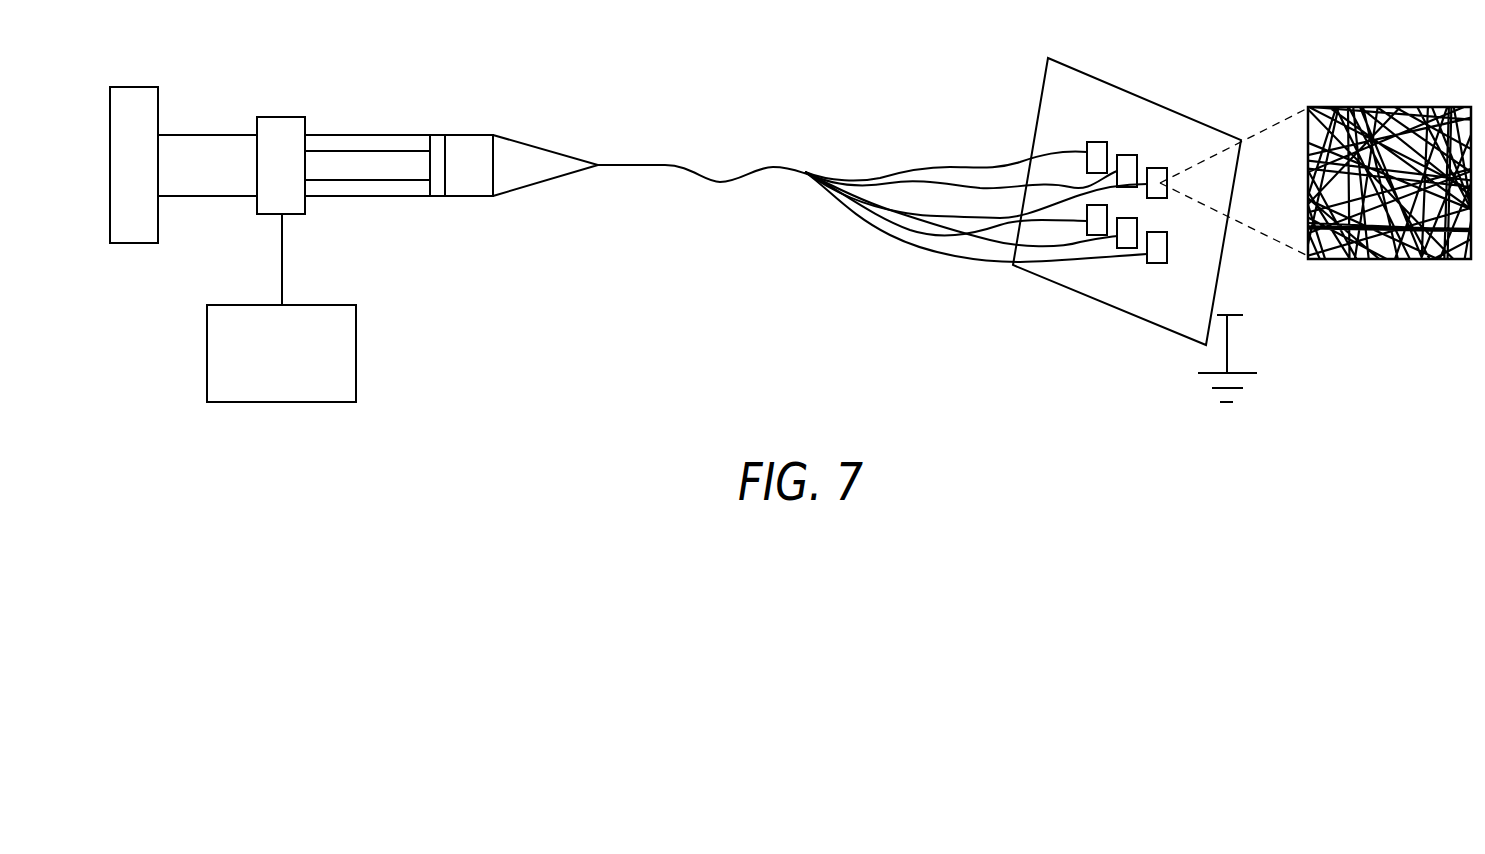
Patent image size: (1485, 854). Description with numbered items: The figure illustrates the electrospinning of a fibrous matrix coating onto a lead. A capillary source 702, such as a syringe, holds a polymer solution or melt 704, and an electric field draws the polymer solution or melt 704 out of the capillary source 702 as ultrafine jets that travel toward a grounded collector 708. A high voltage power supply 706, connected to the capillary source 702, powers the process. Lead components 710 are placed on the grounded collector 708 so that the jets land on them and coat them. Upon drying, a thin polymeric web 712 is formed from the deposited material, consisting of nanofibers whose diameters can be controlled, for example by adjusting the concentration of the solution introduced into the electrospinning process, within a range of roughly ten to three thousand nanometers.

The capillary source 702 is at (378, 135).
The polymer solution or melt 704 is at (774, 166).
The high voltage power supply 706 is at (207, 353).
The grounded collector 708 is at (1148, 98).
The lead components 710 is at (1157, 256).
The polymeric web 712 is at (1390, 106).